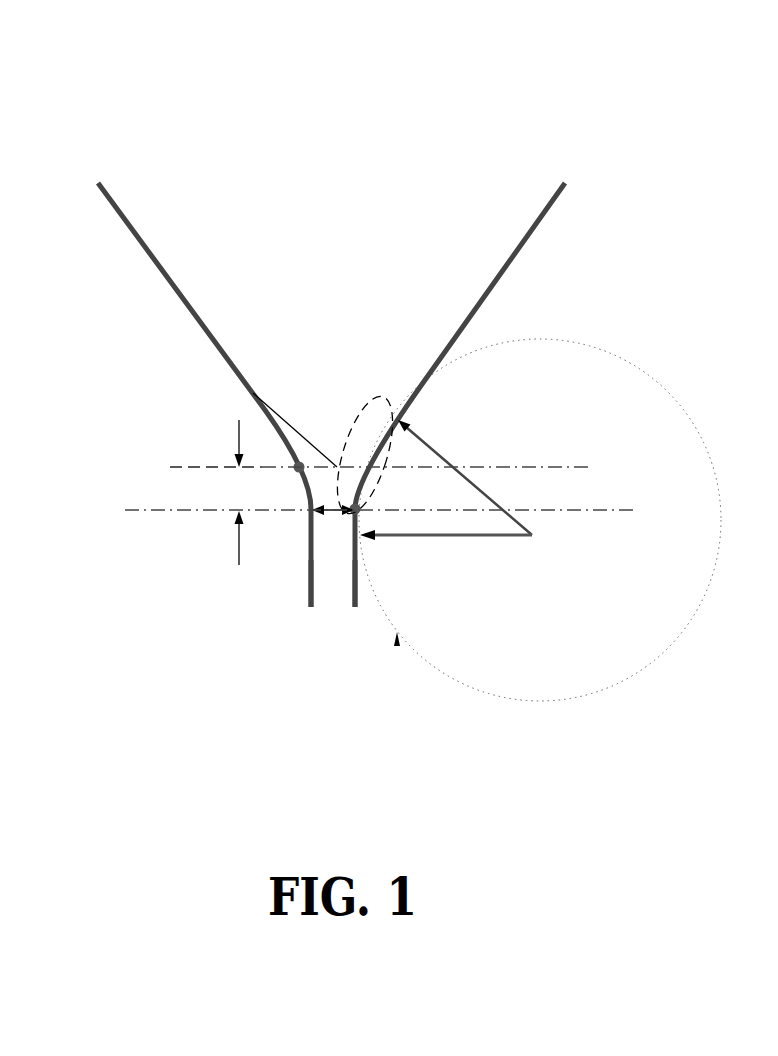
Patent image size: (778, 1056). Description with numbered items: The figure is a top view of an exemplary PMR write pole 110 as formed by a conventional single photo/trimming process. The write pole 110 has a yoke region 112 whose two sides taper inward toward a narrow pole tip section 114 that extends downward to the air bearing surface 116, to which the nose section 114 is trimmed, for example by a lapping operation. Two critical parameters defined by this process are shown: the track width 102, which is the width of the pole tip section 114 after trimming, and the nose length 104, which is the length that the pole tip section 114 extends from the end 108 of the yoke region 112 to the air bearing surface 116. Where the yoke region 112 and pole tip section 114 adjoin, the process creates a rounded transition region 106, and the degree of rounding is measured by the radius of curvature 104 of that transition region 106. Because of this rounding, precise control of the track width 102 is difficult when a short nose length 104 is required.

The PMR write pole 110 is at (313, 315).
The yoke region 112 is at (273, 340).
The end of yoke region 108 is at (253, 393).
The transition region 106 is at (363, 433).
The nose length 104 is at (380, 490).
The track width 102 is at (316, 515).
The pole tip section 114 is at (327, 558).
The air bearing surface 116 is at (148, 524).